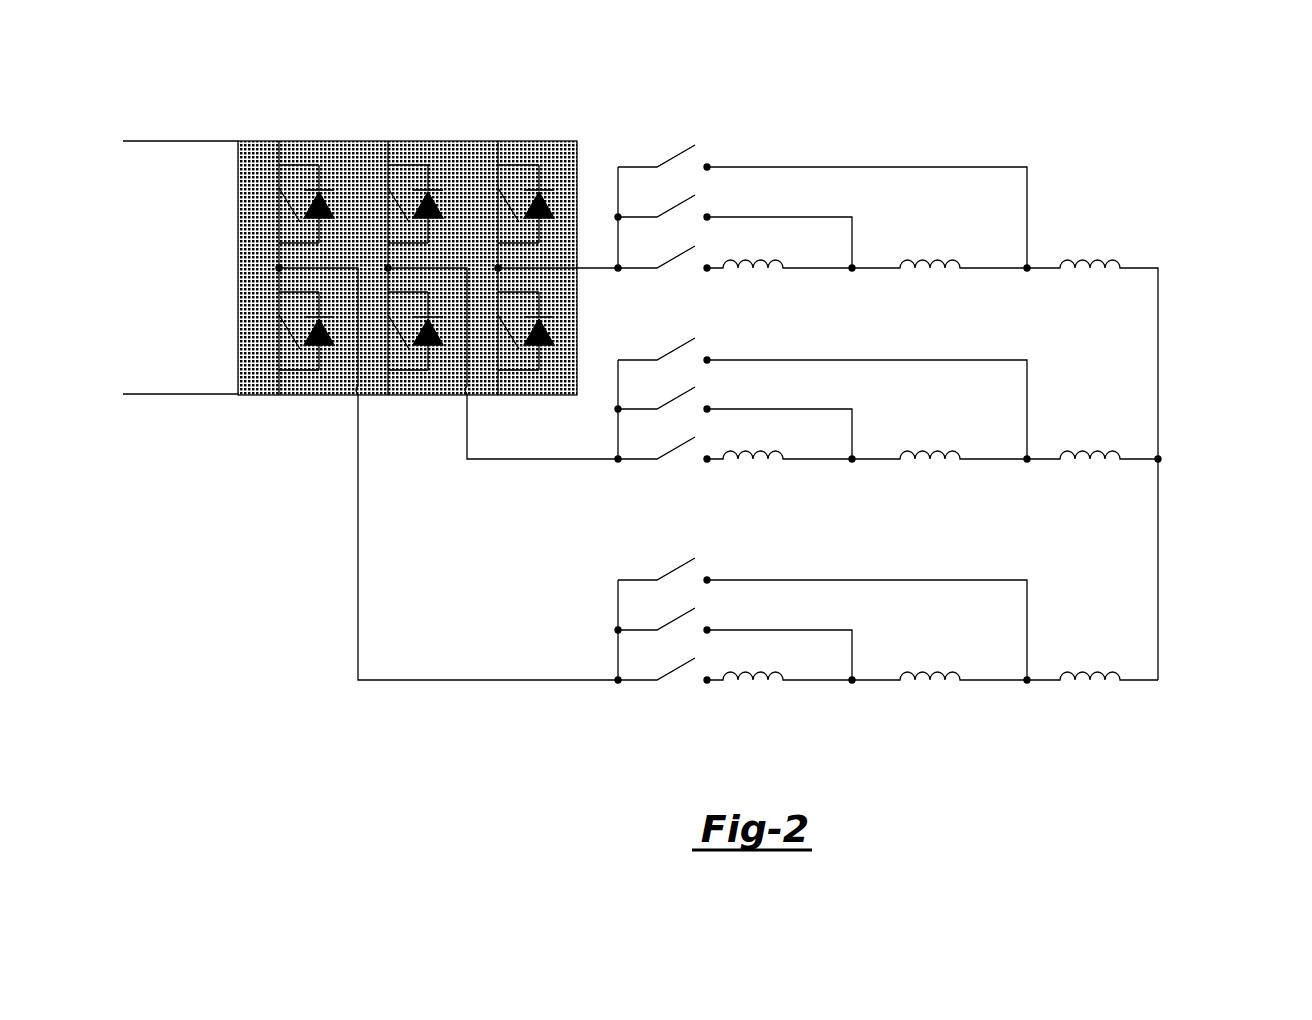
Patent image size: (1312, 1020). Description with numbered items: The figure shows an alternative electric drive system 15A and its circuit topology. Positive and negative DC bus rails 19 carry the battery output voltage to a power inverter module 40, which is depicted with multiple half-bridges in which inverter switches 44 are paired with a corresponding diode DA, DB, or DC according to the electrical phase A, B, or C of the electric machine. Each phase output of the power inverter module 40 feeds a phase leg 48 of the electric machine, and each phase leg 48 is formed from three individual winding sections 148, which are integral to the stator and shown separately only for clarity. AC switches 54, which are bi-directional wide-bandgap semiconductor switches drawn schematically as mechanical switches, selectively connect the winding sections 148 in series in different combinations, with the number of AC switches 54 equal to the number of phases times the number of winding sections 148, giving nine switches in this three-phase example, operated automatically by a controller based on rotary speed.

The DC bus rails 19 is at (176, 141).
The power inverter module 40 is at (445, 141).
The inverter switches 44 is at (413, 275).
The AC switches 54 is at (720, 145).
The winding sections 148 is at (708, 87).
The alternative electric drive system 15A is at (1102, 70).
The phase legs 48 is at (1217, 227).